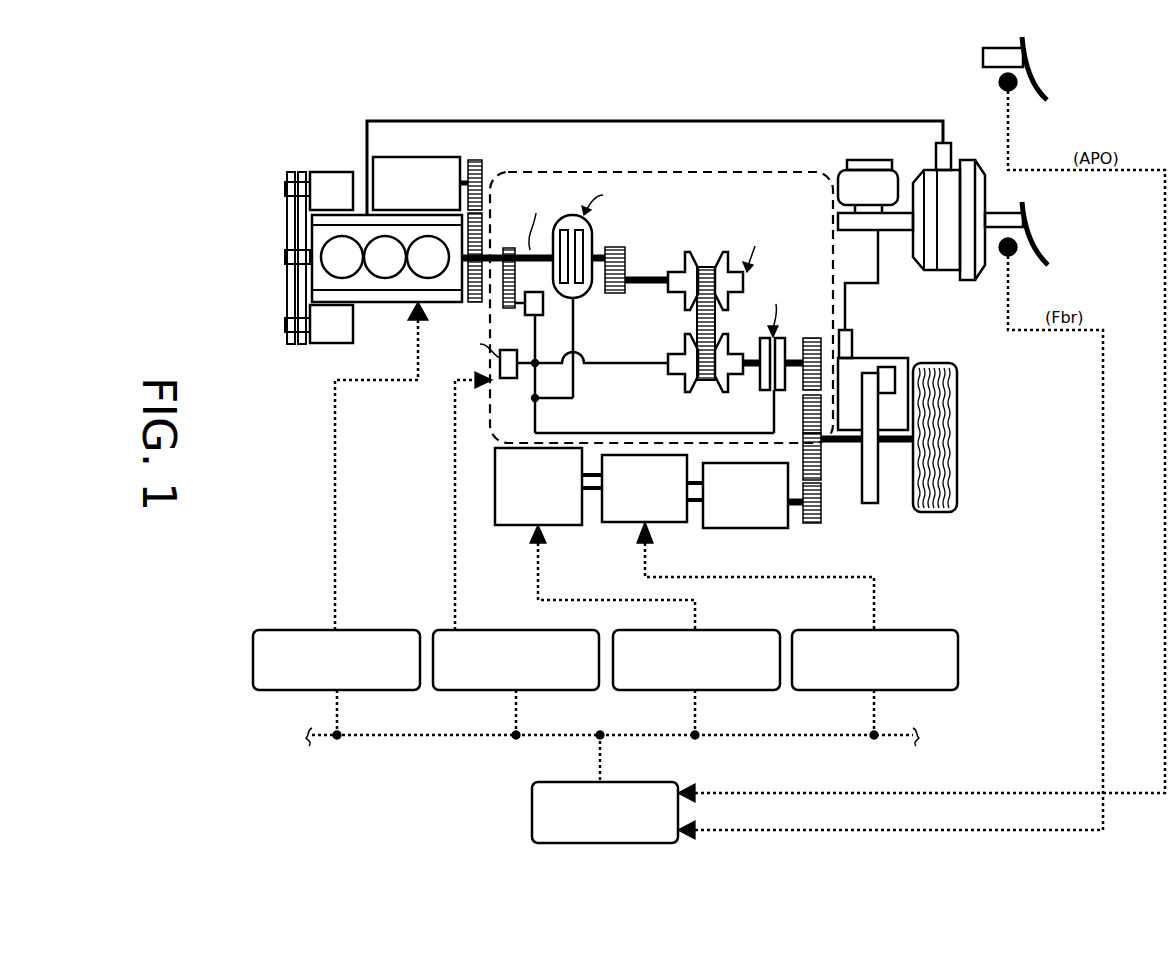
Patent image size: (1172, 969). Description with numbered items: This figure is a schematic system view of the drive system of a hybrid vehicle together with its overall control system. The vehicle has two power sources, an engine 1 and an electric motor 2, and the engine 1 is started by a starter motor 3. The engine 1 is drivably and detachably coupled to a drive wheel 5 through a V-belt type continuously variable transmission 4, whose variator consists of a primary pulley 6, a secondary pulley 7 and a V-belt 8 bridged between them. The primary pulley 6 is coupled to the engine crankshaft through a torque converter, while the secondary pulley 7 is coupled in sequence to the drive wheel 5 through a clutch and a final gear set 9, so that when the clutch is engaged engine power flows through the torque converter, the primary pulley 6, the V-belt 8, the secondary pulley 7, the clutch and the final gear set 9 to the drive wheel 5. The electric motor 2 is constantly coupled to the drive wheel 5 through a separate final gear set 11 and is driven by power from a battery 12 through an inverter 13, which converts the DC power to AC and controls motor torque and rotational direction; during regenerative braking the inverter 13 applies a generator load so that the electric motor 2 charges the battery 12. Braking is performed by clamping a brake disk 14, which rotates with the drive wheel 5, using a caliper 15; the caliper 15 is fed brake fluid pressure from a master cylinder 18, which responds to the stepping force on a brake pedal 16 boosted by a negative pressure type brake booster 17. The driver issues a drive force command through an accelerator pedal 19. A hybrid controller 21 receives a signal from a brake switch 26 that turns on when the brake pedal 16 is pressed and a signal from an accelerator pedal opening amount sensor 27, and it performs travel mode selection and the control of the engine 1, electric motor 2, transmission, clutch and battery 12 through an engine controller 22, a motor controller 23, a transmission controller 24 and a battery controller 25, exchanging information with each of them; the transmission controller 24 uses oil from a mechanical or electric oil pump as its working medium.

The engine 1 is at (386, 306).
The electric motor 2 is at (766, 528).
The starter motor 3 is at (428, 157).
The V-belt type continuously variable transmission 4 is at (748, 172).
The drive wheel 5 is at (957, 372).
The primary pulley 6 is at (680, 262).
The secondary pulley 7 is at (682, 392).
The V-belt 8 is at (697, 312).
The final gear set 9 is at (803, 388).
The final gear set 11 is at (821, 465).
The battery 12 is at (507, 525).
The inverter 13 is at (622, 522).
The brake disk 14 is at (878, 490).
The caliper 15 is at (900, 358).
The brake pedal 16 is at (1048, 248).
The brake booster 17 is at (946, 272).
The master cylinder 18 is at (895, 232).
The accelerator pedal 19 is at (1047, 80).
The hybrid controller 21 is at (532, 800).
The engine controller 22 is at (400, 630).
The motor controller 23 is at (937, 630).
The transmission controller 24 is at (502, 630).
The battery controller 25 is at (745, 630).
The brake switch 26 is at (1015, 258).
The accelerator pedal opening amount sensor 27 is at (1015, 92).